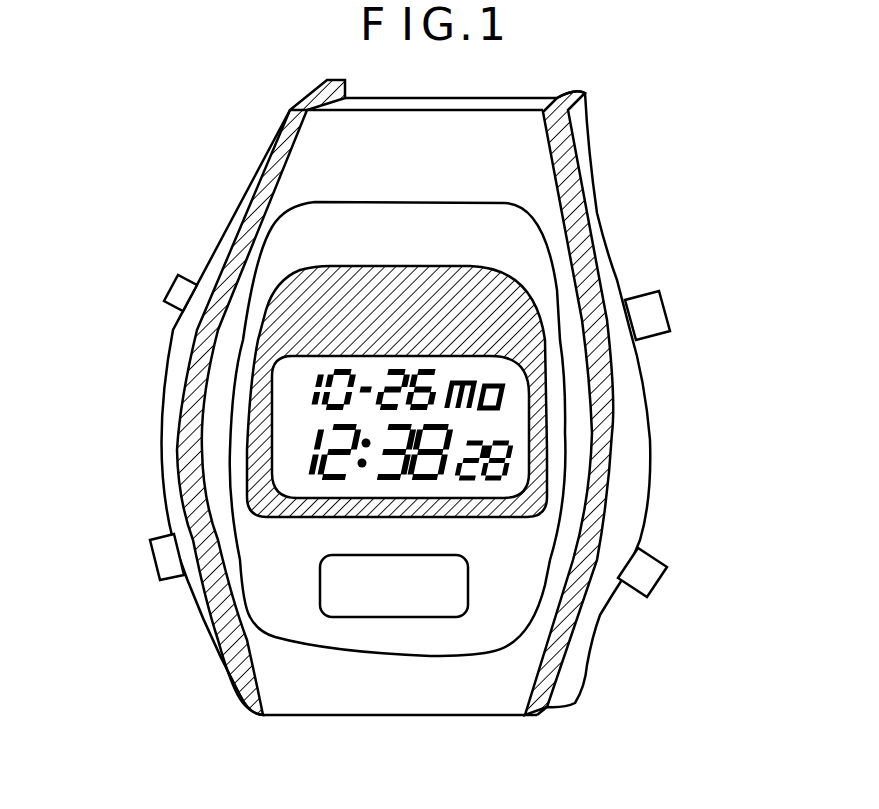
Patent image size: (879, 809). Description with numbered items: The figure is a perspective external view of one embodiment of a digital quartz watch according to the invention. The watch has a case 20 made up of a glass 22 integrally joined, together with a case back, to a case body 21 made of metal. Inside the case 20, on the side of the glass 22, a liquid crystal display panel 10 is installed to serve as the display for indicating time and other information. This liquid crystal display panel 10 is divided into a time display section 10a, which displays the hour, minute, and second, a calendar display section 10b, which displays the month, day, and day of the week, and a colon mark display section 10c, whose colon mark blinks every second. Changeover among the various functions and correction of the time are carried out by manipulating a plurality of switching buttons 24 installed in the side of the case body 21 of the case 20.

The case 20 is at (214, 178).
The case body 21 is at (648, 433).
The glass 22 is at (518, 230).
The switching buttons 24 is at (180, 290).
The liquid crystal display panel 10 is at (287, 406).
The time display section 10a is at (411, 486).
The calendar display section 10b is at (440, 362).
The colon mark display section 10c is at (352, 478).